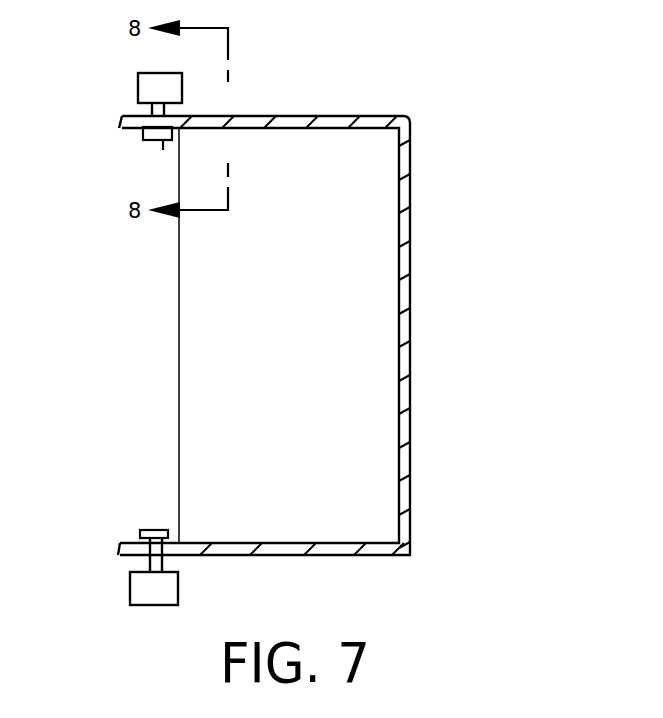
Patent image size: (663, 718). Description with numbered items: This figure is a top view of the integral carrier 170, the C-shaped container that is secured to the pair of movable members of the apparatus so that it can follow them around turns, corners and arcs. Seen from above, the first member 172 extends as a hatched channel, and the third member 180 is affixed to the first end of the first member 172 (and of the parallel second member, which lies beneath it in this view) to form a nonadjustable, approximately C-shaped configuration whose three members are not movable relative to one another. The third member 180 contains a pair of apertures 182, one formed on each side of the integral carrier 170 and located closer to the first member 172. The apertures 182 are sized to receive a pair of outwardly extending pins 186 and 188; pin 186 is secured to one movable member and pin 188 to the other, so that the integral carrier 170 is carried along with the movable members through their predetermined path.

The integral carrier 170 is at (488, 168).
The first member 172 is at (300, 355).
The third member 180 is at (178, 357).
The aperture 182 is at (160, 142).
The outwardly extending pin 186 is at (148, 568).
The outwardly extending pin 188 is at (155, 112).